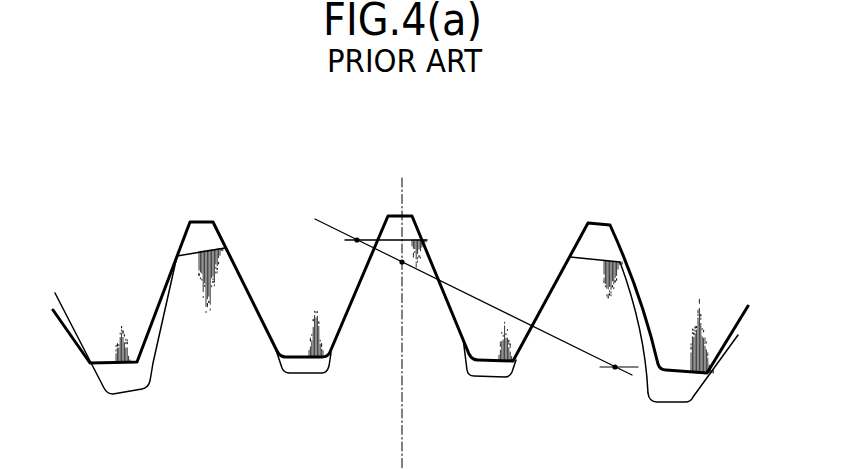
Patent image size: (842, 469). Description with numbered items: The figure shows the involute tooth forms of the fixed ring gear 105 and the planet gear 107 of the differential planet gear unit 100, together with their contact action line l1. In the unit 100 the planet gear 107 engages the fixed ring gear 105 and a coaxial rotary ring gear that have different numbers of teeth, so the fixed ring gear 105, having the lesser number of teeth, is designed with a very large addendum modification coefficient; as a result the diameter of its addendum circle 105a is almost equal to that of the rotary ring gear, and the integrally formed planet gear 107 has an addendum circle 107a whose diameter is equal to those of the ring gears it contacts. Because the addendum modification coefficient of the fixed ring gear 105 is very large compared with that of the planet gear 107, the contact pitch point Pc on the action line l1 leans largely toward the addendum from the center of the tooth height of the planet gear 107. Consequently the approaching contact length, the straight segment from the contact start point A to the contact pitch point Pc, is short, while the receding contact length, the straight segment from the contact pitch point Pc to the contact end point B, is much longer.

The differential planet gear unit 100 is at (580, 178).
The fixed ring gear 105 is at (513, 258).
The addendum circle of the fixed ring gear 105a is at (493, 363).
The planet gear 107 is at (380, 360).
The addendum circle of the planet gear 107a is at (411, 241).
The contact start point A is at (357, 240).
The contact end point B is at (615, 367).
The contact pitch point Pc is at (402, 262).
The contact action line l1 is at (492, 305).